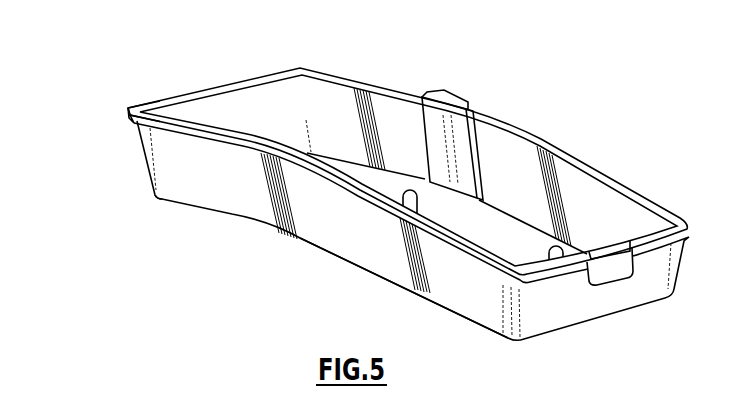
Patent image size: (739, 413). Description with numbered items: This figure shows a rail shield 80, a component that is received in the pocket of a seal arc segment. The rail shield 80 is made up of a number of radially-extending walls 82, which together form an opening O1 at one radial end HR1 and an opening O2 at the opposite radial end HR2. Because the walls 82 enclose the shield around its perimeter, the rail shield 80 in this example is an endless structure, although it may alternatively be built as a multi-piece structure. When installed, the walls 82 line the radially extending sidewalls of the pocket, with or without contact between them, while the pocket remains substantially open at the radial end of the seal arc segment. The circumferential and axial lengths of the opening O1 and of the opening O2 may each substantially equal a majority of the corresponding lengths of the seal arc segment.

The rail shield 80 is at (206, 41).
The radially-extending walls 82 is at (255, 98).
The radial end HR1 is at (123, 200).
The opposite radial end HR2 is at (112, 103).
The opening O1 is at (478, 340).
The opening O2 is at (569, 166).